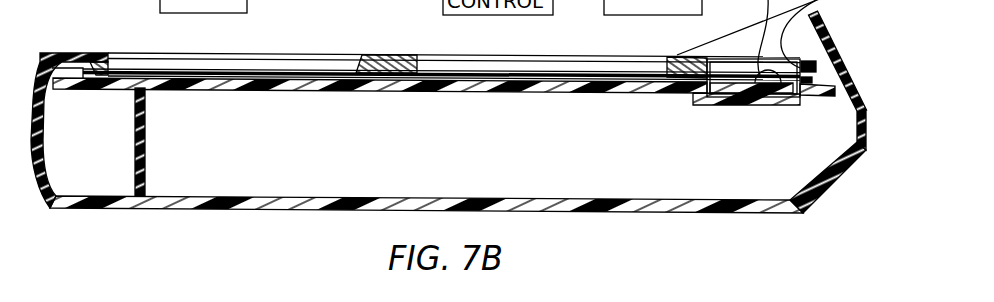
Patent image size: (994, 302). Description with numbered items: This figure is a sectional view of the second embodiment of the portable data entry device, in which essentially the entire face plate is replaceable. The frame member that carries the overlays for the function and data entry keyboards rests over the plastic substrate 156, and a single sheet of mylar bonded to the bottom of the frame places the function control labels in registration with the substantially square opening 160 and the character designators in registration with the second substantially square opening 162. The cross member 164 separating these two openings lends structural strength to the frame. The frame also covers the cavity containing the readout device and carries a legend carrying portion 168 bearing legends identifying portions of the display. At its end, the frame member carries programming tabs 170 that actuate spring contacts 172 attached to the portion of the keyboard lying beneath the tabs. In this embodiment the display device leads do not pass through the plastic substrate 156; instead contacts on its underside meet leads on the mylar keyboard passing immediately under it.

The plastic substrate 156 is at (477, 89).
The substantially square opening 160 is at (482, 70).
The second substantially square opening 162 is at (247, 66).
The cross member 164 is at (384, 57).
The legend carrying portion 168 is at (677, 55).
The programming tabs 170 is at (810, 16).
The spring contacts 172 is at (815, 96).